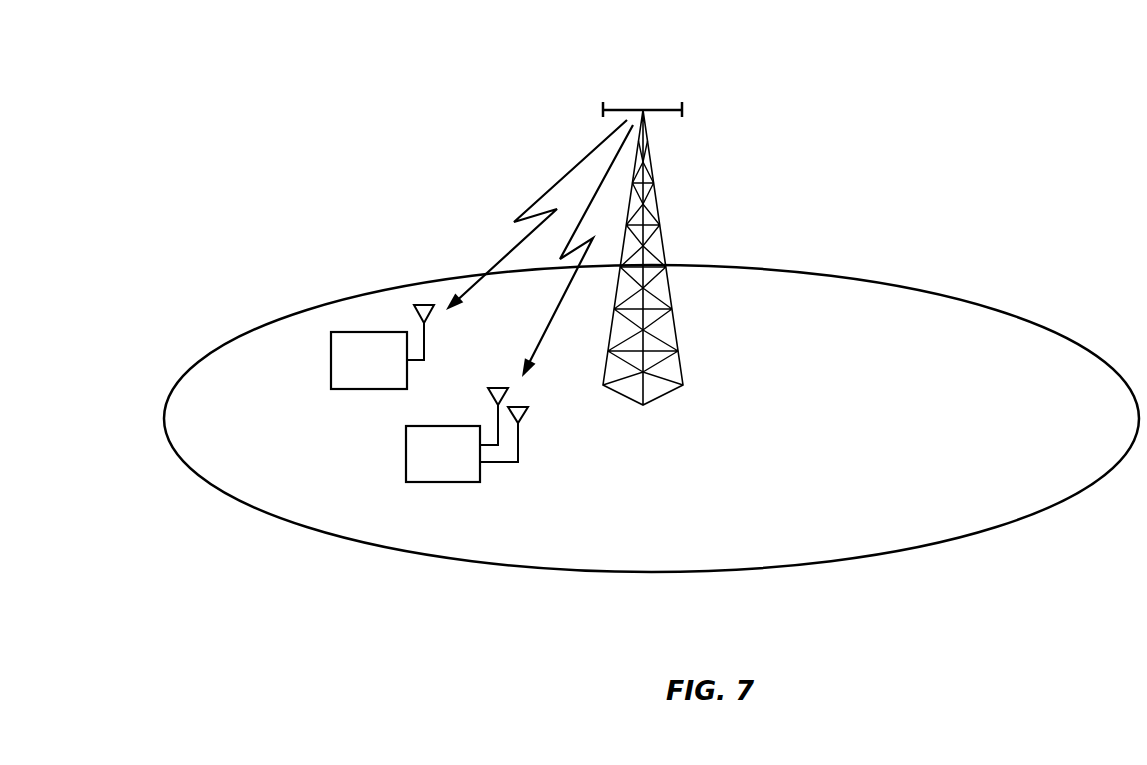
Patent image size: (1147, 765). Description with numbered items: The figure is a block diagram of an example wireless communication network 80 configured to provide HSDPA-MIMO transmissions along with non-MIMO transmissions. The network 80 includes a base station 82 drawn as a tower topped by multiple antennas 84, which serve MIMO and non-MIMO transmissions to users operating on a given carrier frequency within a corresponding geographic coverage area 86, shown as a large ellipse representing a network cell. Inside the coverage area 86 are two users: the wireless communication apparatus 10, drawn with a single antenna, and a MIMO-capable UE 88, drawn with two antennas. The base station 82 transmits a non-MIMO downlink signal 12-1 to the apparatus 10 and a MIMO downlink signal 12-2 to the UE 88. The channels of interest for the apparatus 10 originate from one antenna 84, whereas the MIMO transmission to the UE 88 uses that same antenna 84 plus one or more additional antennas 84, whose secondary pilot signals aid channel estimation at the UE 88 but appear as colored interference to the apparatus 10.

The wireless communication network 80 is at (1016, 113).
The base station 82 is at (658, 203).
The antennas 84 is at (661, 110).
The geographic coverage area 86 is at (987, 533).
The non-MIMO downlink signal 12-1 is at (568, 172).
The MIMO downlink signal 12-2 is at (552, 323).
The apparatus 10 is at (382, 347).
The MIMO-capable UE 88 is at (467, 435).